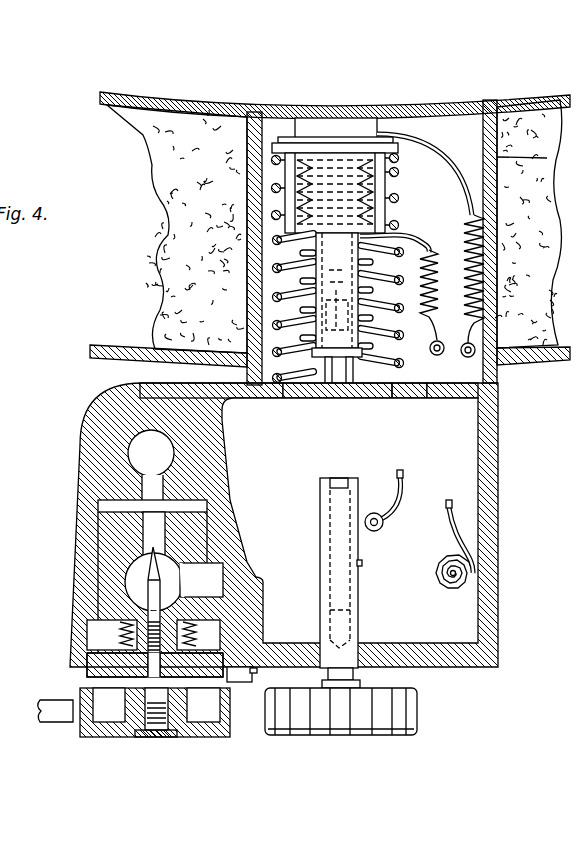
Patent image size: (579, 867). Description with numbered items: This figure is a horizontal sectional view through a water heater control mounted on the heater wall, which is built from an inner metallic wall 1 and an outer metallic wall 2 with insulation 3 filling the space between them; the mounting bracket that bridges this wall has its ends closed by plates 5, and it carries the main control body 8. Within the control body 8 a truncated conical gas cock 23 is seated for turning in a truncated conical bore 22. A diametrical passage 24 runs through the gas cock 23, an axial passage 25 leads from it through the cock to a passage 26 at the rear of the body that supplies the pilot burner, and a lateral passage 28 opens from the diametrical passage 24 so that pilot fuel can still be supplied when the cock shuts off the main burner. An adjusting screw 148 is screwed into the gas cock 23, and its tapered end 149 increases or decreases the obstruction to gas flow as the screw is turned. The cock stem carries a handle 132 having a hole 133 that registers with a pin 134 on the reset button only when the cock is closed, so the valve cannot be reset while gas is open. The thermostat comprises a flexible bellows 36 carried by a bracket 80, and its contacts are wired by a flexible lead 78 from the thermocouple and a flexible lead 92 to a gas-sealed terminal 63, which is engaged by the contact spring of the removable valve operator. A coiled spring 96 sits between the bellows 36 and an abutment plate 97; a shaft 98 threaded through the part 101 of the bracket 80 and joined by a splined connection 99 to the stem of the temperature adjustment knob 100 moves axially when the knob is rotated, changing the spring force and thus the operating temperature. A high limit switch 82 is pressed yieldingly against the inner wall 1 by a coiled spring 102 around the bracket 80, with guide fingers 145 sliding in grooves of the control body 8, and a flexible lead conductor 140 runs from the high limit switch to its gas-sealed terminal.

The inner metallic wall 1 is at (163, 103).
The outer metallic wall 2 is at (115, 345).
The insulation 3 is at (197, 283).
The plates 5 is at (243, 223).
The main control body 8 is at (93, 386).
The truncated conical bore 22 is at (107, 533).
The gas cock 23 is at (102, 558).
The diametrical passage 24 is at (140, 596).
The axial passage 25 is at (158, 532).
The rear passage 26 is at (137, 448).
The lateral passage 28 is at (208, 578).
The flexible bellows 36 is at (380, 178).
The gas-sealed terminal 63 is at (405, 483).
The inner lead terminal 78 is at (450, 528).
The bracket 80 is at (273, 198).
The high limit switch 82 is at (330, 126).
The flexible lead 92 is at (432, 250).
The coiled spring 96 is at (421, 270).
The abutment plate 97 is at (383, 322).
The shaft 98 is at (327, 438).
The splined connection 99 is at (361, 564).
The temperature adjustment knob 100 is at (367, 727).
The threaded bracket part 101 is at (315, 355).
The coiled spring 102 is at (382, 362).
The handle 132 is at (197, 737).
The hole 133 is at (90, 712).
The pin 134 is at (52, 713).
The flexible lead conductor 140 is at (460, 145).
The guide fingers 145 is at (335, 463).
The adjusting screw 148 is at (100, 683).
The tapered end 149 is at (126, 589).